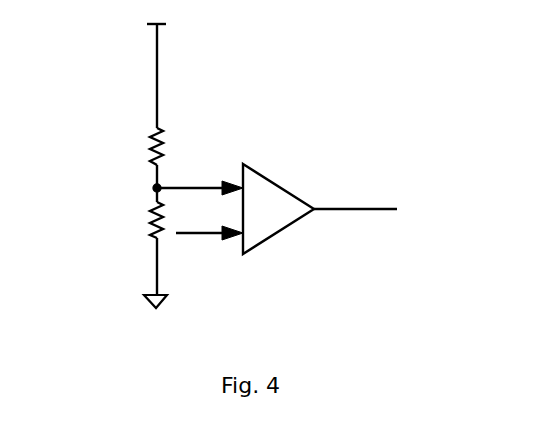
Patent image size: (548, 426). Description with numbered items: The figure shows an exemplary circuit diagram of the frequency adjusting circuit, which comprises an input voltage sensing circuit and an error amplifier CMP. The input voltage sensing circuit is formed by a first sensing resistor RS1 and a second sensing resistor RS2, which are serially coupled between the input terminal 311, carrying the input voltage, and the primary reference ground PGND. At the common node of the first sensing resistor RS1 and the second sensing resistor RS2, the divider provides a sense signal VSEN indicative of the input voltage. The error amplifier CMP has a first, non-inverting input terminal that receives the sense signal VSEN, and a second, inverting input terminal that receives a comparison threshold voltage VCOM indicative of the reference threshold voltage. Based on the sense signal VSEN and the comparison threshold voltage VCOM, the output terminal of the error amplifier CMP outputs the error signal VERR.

The input terminal 311 is at (153, 76).
The first sensing resistor RS1 is at (131, 146).
The second sensing resistor RS2 is at (130, 220).
The primary reference ground PGND is at (183, 273).
The sense signal VSEN is at (200, 180).
The comparison threshold voltage VCOM is at (209, 225).
The error amplifier CMP is at (278, 209).
The error signal VERR is at (355, 198).